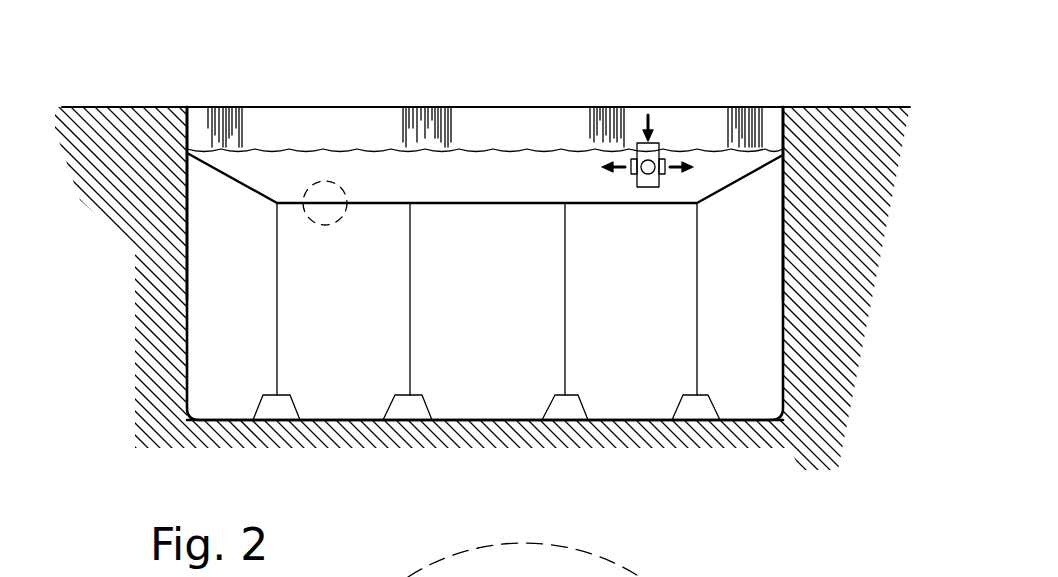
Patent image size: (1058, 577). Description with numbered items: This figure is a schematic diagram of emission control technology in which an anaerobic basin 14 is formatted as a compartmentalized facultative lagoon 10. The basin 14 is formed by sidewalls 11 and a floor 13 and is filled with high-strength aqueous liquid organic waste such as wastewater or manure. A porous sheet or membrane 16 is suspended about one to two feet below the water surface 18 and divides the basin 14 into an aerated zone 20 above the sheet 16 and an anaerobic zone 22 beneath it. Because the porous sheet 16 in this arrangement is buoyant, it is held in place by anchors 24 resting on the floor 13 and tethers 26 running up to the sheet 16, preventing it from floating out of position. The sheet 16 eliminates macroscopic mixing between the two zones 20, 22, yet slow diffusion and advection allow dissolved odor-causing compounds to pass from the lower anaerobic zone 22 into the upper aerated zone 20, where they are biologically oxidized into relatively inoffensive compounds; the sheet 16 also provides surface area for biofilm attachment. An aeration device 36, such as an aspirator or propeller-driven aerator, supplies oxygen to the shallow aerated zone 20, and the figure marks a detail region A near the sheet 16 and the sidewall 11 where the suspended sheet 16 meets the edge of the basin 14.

The compartmentalized facultative lagoon 10 is at (138, 337).
The sidewalls 11 is at (187, 350).
The floor 13 is at (465, 420).
The basin 14 is at (222, 263).
The porous sheet or membrane 16 is at (743, 182).
The water surface 18 is at (556, 147).
The aerated zone 20 is at (722, 165).
The anaerobic zone 22 is at (752, 318).
The anchors 24 is at (570, 408).
The tethers 26 is at (410, 363).
The aeration device 36 is at (656, 142).
The detail region A is at (333, 182).